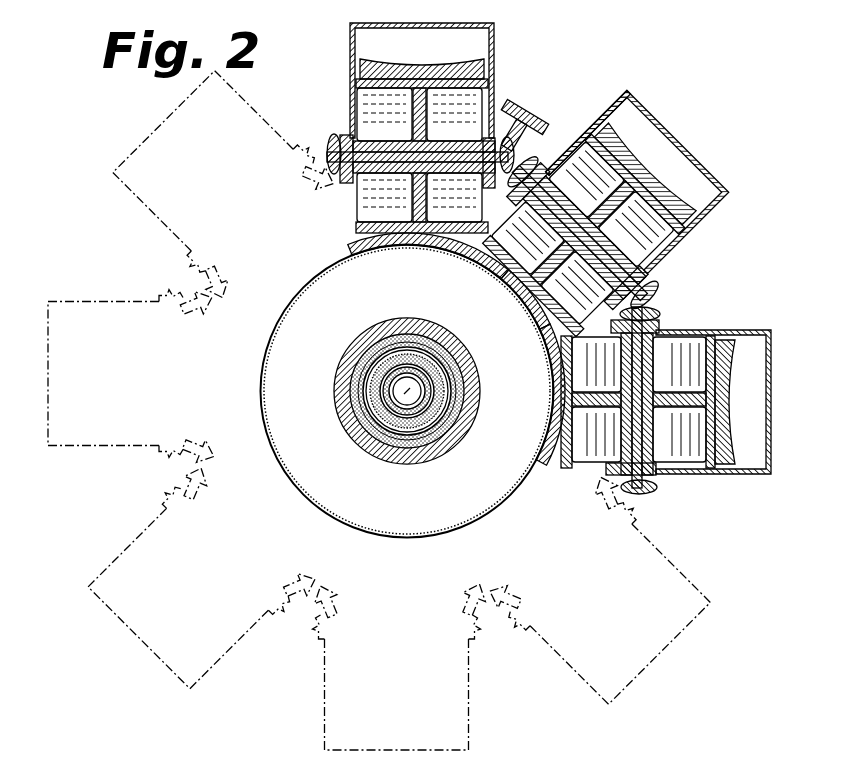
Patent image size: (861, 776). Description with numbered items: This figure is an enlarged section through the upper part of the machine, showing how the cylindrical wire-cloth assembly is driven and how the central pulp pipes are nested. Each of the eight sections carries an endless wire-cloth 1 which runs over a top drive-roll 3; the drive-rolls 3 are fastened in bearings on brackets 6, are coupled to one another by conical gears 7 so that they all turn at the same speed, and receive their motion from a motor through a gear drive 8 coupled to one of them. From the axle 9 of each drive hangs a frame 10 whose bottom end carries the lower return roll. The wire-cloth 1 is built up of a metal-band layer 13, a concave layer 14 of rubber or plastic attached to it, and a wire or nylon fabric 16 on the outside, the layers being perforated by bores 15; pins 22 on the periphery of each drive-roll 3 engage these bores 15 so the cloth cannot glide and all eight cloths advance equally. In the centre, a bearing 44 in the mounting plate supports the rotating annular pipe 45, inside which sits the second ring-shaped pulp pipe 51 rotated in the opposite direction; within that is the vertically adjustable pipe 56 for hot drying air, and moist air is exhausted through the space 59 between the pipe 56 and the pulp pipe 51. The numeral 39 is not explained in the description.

The endless wire-cloth 1 is at (432, 249).
The drive-roll 3 is at (607, 187).
The bracket 6 is at (339, 137).
The conical gear 7 is at (648, 312).
The gear drive 8 is at (522, 152).
The axle 9 is at (675, 332).
The frame 10 is at (655, 478).
The layer 13 is at (522, 290).
The layer of rubber or plastic substance 14 is at (478, 265).
The bore 15 is at (548, 372).
The wire or nylon fabric 16 is at (390, 248).
The pin 22 is at (548, 132).
The housing cover 39 is at (672, 150).
The bearing 44 is at (463, 422).
The annular pipe 45 is at (440, 438).
The second ring-shaped pulp pipe 51 is at (392, 437).
The pipe 56 is at (370, 425).
The space 59 is at (388, 385).